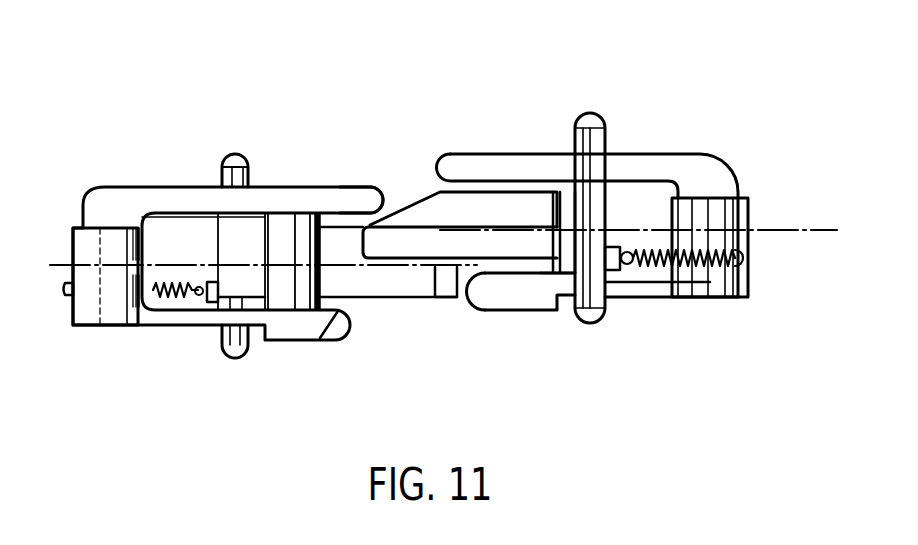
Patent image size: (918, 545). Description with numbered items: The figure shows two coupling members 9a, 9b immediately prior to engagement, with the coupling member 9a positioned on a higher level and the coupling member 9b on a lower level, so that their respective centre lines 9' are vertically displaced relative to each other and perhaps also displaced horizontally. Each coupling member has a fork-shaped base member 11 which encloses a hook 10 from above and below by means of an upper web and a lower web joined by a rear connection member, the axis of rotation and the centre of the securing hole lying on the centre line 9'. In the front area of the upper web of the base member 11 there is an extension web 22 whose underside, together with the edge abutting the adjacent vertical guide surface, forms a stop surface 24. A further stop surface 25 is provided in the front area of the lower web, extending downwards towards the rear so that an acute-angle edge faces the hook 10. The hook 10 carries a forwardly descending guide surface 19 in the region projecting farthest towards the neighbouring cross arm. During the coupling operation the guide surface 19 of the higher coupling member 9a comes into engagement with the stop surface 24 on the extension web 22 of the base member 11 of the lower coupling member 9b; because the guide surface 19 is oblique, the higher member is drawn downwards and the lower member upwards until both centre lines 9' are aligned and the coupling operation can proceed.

The centre line 9' is at (447, 156).
The base member 11 is at (118, 212).
The coupling member 9a is at (685, 168).
The coupling member 9b is at (118, 303).
The extension web 22 is at (303, 207).
The stop surface 24 is at (363, 210).
The guide surface 19 is at (404, 208).
The hook 10 is at (450, 237).
The stop surface 25 is at (330, 318).